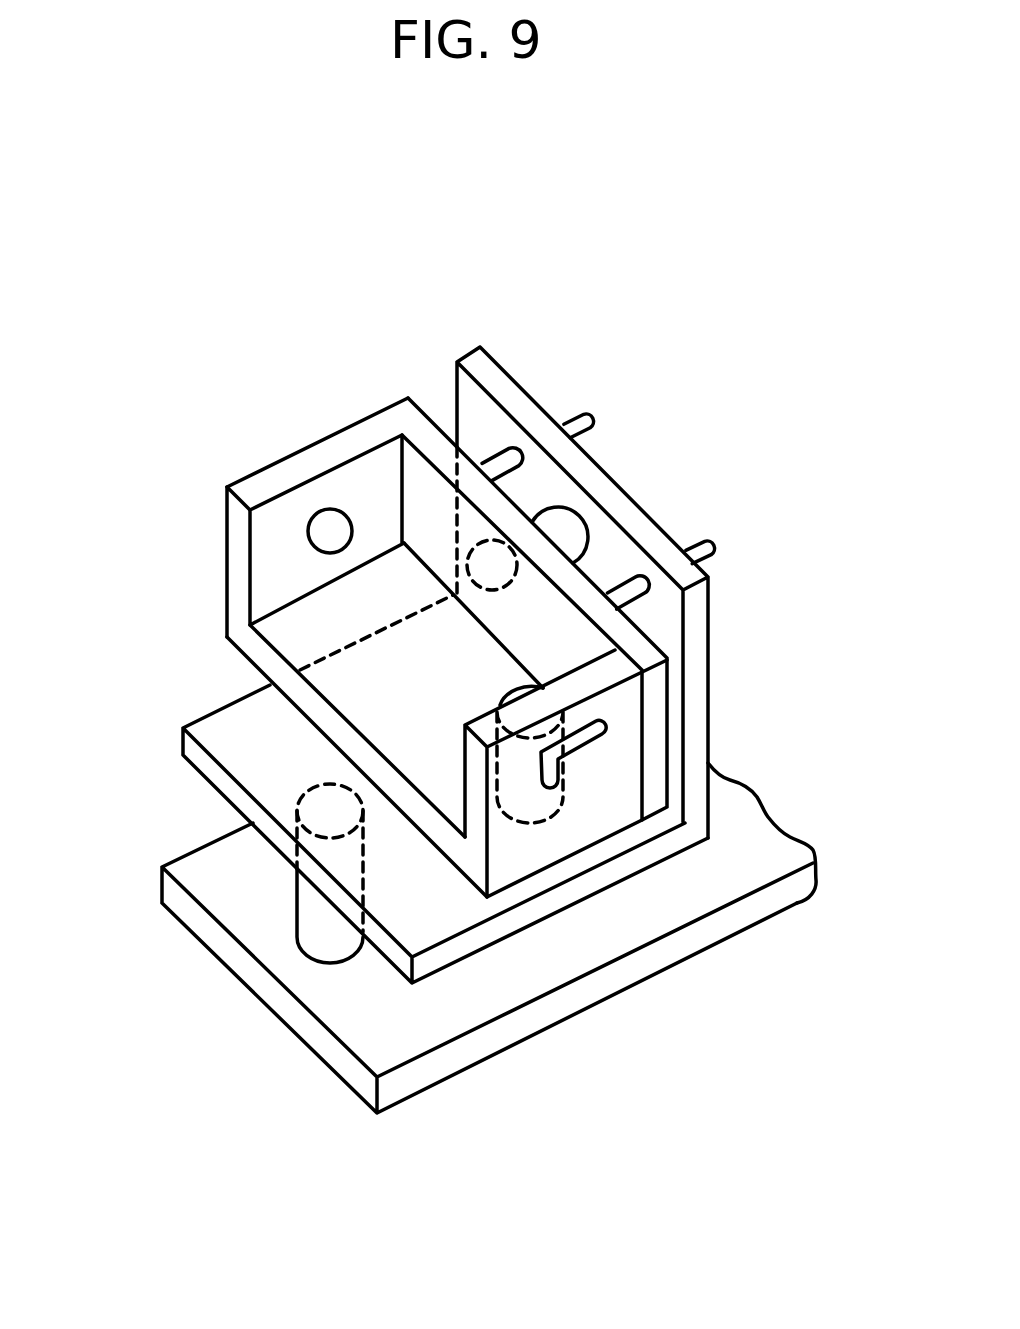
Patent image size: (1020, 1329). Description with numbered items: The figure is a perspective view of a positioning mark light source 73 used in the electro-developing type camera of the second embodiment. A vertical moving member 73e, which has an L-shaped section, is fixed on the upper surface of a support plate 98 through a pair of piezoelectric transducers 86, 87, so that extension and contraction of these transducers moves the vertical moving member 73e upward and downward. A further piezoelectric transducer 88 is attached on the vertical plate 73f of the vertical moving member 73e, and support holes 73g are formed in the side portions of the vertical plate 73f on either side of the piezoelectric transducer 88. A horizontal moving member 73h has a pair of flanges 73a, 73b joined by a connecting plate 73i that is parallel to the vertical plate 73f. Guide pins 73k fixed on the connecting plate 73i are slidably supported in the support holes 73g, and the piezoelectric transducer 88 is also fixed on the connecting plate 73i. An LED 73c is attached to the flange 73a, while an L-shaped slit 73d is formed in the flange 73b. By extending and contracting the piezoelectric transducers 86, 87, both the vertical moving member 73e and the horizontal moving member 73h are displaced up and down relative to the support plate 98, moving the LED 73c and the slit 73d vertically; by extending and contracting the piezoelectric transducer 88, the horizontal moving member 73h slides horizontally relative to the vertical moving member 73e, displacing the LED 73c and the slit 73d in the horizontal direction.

The positioning mark light source 73 is at (443, 639).
The flange 73a is at (297, 481).
The flange 73b is at (659, 837).
The LED 73c is at (330, 528).
The L-shaped slit 73d is at (603, 732).
The vertical moving member 73e is at (201, 776).
The vertical plate 73f is at (663, 557).
The support holes 73g is at (505, 458).
The horizontal moving member 73h is at (226, 541).
The connecting plate 73i is at (423, 472).
The guide pins 73k is at (583, 427).
The piezoelectric transducer 86 is at (323, 922).
The piezoelectric transducer 87 is at (523, 790).
The piezoelectric transducer 88 is at (567, 531).
The support plate 98 is at (433, 1017).